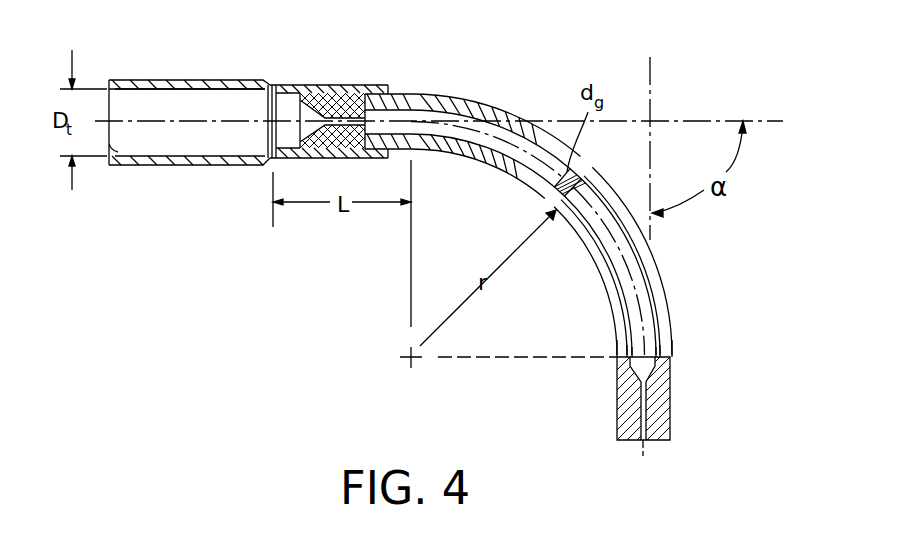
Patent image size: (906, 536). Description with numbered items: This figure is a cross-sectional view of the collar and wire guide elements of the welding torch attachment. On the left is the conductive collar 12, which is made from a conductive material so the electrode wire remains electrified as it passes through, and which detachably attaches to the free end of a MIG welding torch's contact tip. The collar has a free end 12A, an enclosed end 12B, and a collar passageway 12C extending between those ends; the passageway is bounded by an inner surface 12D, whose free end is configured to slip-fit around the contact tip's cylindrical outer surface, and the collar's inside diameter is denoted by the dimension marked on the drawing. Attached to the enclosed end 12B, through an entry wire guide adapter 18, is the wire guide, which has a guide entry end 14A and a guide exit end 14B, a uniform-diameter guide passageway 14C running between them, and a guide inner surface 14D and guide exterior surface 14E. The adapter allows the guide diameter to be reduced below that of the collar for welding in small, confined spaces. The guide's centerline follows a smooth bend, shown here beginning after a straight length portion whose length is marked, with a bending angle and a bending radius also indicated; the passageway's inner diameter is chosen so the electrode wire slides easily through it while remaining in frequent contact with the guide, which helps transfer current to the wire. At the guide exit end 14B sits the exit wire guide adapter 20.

The conductive collar 12 is at (177, 102).
The free end 12A is at (110, 144).
The enclosed end 12B is at (402, 95).
The collar passageway 12C is at (141, 102).
The inner surface 12D is at (224, 97).
The guide entry end 14A is at (460, 100).
The guide exit end 14B is at (664, 344).
The guide passageway 14C is at (508, 143).
The guide inner surface 14D is at (452, 110).
The guide exterior surface 14E is at (660, 282).
The entry wire guide adapter 18 is at (348, 95).
The exit wire guide adapter 20 is at (625, 420).